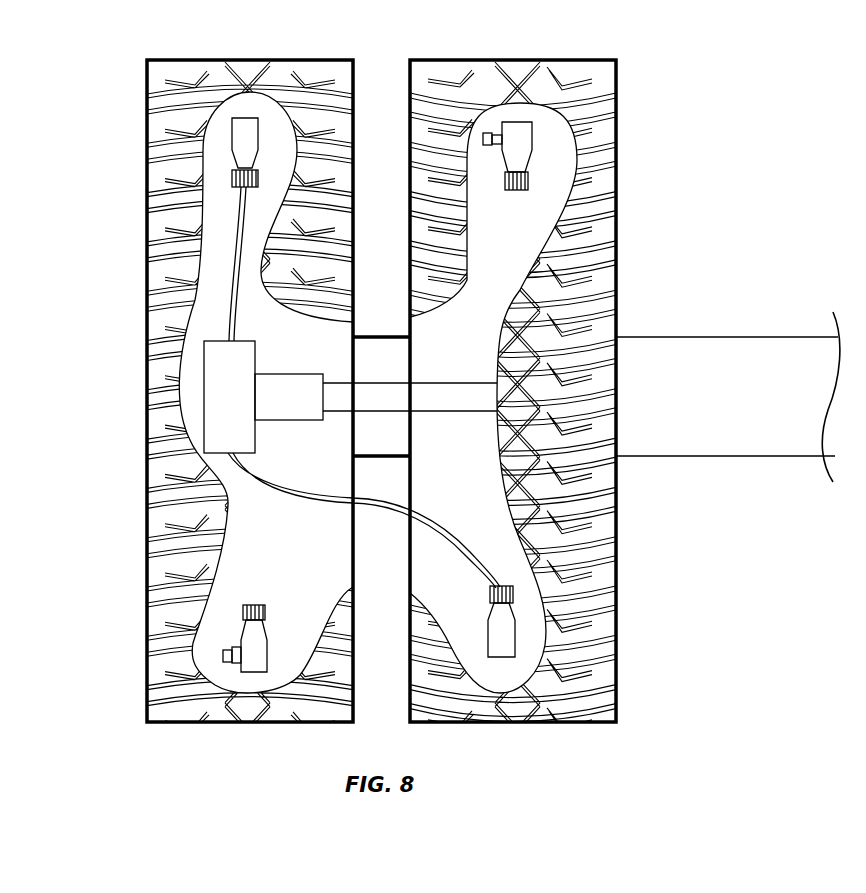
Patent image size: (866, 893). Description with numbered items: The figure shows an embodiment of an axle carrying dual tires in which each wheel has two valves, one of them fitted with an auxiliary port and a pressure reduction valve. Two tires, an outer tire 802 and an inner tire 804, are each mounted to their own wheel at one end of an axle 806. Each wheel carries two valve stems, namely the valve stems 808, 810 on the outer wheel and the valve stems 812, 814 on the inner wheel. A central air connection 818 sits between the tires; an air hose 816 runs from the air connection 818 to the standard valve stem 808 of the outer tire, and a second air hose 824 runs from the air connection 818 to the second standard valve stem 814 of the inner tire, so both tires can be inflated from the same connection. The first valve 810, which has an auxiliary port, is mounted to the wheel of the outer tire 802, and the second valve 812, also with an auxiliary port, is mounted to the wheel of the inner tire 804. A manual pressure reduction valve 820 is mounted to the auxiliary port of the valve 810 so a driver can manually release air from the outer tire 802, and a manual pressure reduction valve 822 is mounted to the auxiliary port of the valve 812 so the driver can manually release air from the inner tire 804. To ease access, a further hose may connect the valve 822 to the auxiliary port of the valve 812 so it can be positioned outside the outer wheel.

The outer tire 802 is at (297, 60).
The inner tire 804 is at (505, 60).
The axle 806 is at (730, 337).
The standard valve stem 808 is at (247, 117).
The first valve 810 is at (254, 673).
The second valve 812 is at (533, 138).
The second standard valve stem 814 is at (500, 657).
The air hose 816 is at (232, 250).
The air connection 818 is at (204, 398).
The manual pressure reduction valve 820 is at (225, 658).
The manual pressure reduction valve 822 is at (489, 133).
The second air hose 824 is at (262, 478).